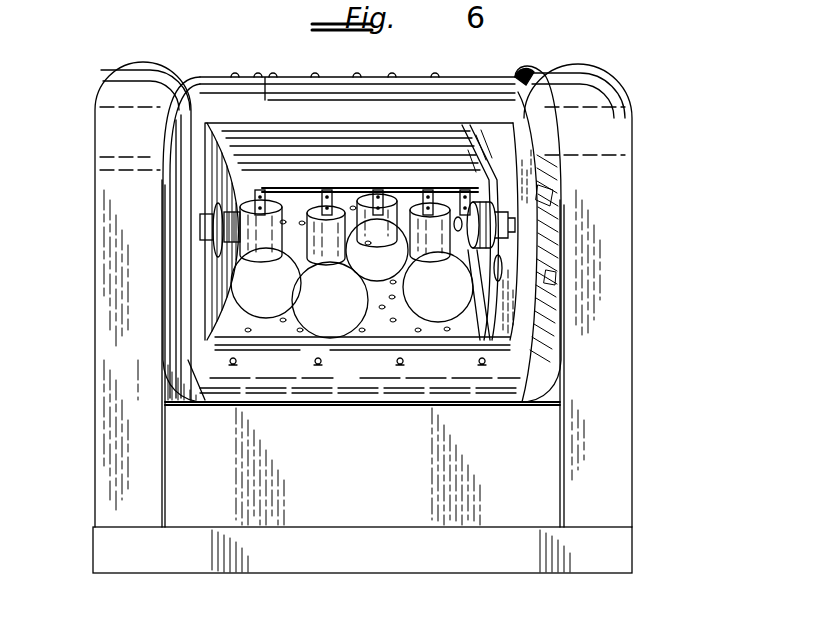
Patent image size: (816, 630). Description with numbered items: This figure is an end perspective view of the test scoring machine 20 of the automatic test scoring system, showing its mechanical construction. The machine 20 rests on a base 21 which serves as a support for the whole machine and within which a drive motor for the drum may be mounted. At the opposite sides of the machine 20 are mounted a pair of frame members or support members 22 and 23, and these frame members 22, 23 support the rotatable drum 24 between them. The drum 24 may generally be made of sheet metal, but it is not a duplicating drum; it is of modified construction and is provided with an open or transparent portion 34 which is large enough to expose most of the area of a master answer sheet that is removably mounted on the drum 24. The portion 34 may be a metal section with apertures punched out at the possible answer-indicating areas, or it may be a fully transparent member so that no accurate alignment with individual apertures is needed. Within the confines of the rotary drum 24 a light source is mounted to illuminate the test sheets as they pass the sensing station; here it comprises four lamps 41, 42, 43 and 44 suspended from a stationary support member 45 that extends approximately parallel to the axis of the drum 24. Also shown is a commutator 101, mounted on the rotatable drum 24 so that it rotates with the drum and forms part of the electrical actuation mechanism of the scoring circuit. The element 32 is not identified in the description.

The test scoring machine 20 is at (662, 127).
The base 21 is at (575, 557).
The frame member 22 is at (612, 272).
The frame member 23 is at (108, 285).
The rotatable drum 24 is at (218, 84).
The lower front panel 32 is at (310, 476).
The open or transparent portion 34 is at (387, 325).
The lamp 41 is at (277, 296).
The lamp 42 is at (342, 313).
The lamp 43 is at (389, 272).
The lamp 44 is at (449, 300).
The stationary support member 45 is at (449, 192).
The commutator 101 is at (553, 190).